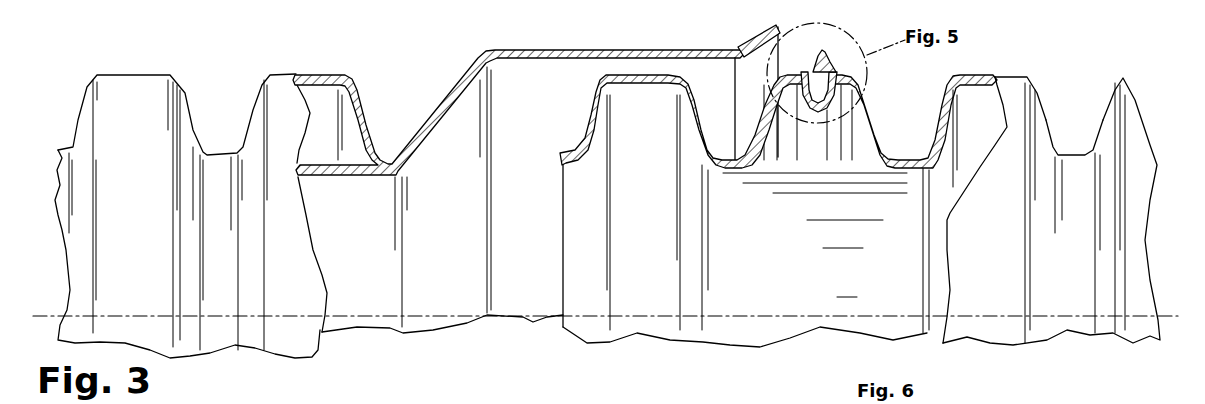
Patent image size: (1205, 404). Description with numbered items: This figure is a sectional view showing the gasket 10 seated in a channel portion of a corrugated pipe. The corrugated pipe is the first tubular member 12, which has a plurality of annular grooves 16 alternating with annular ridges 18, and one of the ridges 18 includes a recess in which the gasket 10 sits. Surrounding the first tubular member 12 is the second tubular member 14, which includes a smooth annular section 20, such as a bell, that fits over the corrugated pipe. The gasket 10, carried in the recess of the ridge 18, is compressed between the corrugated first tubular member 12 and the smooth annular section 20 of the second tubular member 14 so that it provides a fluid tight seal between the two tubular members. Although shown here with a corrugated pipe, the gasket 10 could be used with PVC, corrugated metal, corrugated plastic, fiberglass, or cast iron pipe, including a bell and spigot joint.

The gasket 10 is at (828, 52).
The first tubular member 12 is at (1128, 100).
The second tubular member 14 is at (278, 60).
The annular grooves 16 is at (1078, 157).
The annular ridges 18 is at (997, 76).
The smooth annular section 20 is at (657, 50).